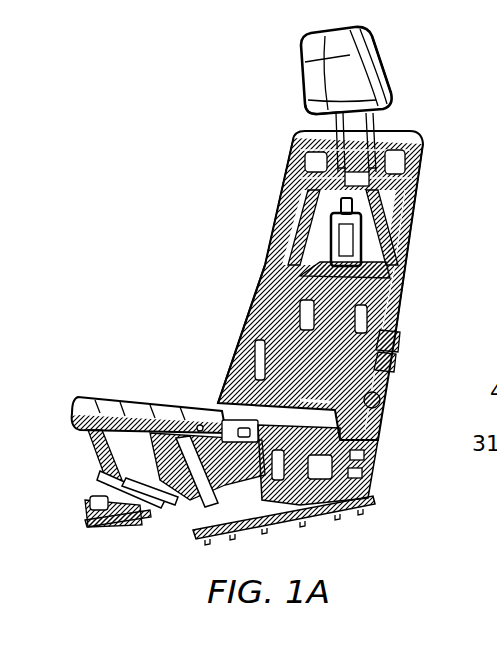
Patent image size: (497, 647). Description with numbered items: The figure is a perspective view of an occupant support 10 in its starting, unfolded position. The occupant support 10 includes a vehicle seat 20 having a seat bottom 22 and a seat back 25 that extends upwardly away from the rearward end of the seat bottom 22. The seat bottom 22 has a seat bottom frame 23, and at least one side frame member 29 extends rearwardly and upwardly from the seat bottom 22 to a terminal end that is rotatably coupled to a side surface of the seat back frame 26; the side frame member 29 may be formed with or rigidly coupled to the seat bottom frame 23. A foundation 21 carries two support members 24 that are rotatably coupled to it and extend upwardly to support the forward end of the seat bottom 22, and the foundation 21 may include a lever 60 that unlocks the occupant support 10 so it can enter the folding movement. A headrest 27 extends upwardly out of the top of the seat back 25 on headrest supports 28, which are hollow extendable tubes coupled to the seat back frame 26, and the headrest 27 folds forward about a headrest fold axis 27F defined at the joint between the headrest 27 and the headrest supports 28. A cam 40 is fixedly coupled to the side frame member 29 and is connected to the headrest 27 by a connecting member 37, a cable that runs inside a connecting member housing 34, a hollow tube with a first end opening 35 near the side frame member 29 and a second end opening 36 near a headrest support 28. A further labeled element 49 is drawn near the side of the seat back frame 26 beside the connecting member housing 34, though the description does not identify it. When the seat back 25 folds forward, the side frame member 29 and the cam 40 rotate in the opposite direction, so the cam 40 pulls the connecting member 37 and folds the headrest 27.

The occupant support 10 is at (140, 70).
The vehicle seat 20 is at (245, 144).
The foundation 21 is at (200, 532).
The seat bottom 22 is at (131, 378).
The seat bottom frame 23 is at (218, 400).
The support members 24 is at (95, 456).
The seat back 25 is at (265, 206).
The seat back frame 26 is at (256, 261).
The headrest 27 is at (295, 61).
The headrest fold axis 27F is at (386, 102).
The headrest supports 28 is at (392, 118).
The side frame member 29 is at (386, 398).
The connecting member housing 34 is at (400, 218).
The first end opening 35 is at (393, 330).
The second end opening 36 is at (303, 93).
The connecting member 37 is at (397, 337).
The cam 40 is at (262, 302).
The actuator 49 is at (394, 360).
The lever 60 is at (380, 468).